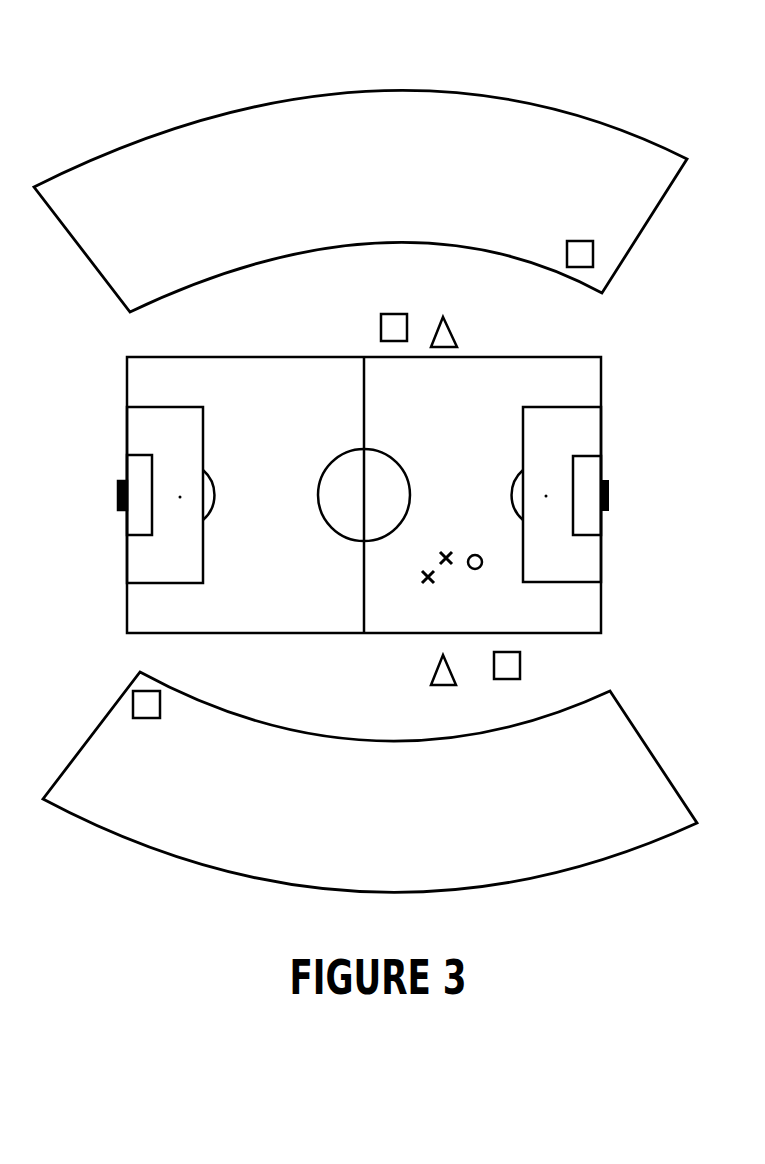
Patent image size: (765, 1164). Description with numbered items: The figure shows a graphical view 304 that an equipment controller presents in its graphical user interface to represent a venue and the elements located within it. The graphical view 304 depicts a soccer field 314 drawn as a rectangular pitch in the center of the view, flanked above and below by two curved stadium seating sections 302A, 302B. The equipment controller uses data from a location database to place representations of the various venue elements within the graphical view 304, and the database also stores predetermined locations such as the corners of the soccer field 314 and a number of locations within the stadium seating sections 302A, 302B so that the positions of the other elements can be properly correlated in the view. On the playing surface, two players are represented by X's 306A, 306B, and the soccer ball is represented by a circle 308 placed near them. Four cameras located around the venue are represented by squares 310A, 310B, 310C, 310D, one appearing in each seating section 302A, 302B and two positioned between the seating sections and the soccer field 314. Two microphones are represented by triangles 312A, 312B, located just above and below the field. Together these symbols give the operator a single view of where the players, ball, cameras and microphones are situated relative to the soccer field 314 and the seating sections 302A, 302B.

The graphical view 304 is at (640, 62).
The stadium seating section 302A is at (360, 201).
The stadium seating section 302B is at (370, 782).
The X 306A is at (428, 566).
The X 306B is at (446, 548).
The circle 308 is at (478, 555).
The square 310A is at (520, 664).
The square 310B is at (133, 702).
The square 310C is at (381, 327).
The square 310D is at (593, 253).
The triangle 312A is at (434, 675).
The triangle 312B is at (455, 331).
The soccer field 314 is at (608, 495).